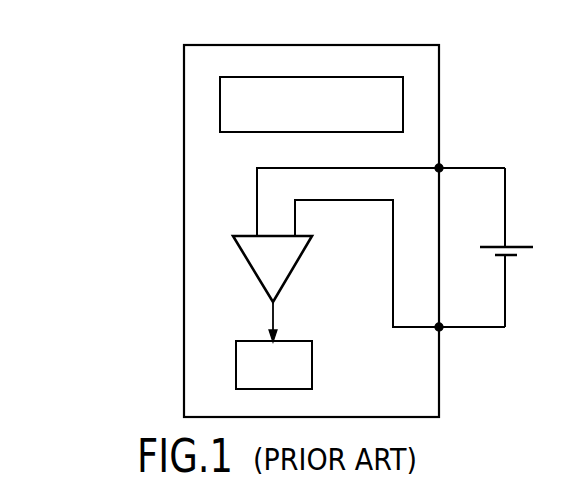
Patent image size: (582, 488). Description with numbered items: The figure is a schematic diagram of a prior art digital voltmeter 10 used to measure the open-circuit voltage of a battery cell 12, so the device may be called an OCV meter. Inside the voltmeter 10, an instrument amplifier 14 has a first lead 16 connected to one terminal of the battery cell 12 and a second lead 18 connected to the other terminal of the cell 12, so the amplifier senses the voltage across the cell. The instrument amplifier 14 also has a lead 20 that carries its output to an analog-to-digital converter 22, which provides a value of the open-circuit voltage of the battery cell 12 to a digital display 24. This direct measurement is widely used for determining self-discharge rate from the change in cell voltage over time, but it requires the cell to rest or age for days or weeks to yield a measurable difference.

The digital voltmeter 10 is at (457, 92).
The battery cell 12 is at (520, 256).
The instrument amplifier 14 is at (251, 265).
The first lead 16 is at (477, 329).
The second lead 18 is at (505, 197).
The lead 20 is at (273, 317).
The analog-to-digital converter 22 is at (288, 378).
The digital display 24 is at (320, 119).